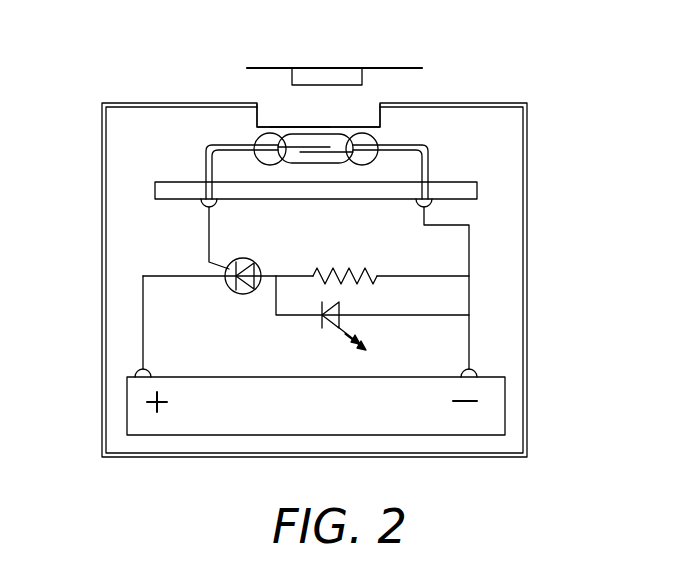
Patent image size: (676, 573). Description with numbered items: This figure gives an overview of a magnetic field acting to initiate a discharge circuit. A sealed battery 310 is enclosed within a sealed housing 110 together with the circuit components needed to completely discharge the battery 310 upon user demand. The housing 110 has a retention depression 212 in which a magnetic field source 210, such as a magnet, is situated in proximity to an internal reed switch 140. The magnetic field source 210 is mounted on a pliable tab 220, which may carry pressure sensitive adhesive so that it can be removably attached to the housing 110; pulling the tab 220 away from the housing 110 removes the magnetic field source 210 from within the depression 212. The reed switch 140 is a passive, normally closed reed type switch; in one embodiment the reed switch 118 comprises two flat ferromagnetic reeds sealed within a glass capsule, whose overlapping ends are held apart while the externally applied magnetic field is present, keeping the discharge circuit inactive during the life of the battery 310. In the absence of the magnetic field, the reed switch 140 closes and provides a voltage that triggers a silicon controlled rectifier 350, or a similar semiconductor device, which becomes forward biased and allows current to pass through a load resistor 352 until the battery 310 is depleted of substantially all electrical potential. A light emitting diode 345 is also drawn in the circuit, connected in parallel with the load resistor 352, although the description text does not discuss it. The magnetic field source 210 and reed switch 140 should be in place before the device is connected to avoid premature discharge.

The housing 110 is at (102, 343).
The reed switch 118 is at (338, 130).
The reed switch 140 is at (205, 167).
The magnetic field source 210 is at (362, 78).
The retention depression 212 is at (298, 127).
The tab 220 is at (323, 67).
The sealed battery 310 is at (302, 435).
The light emitting diode 345 is at (328, 327).
The silicon controlled rectifier 350 is at (230, 267).
The load resistor 352 is at (332, 265).